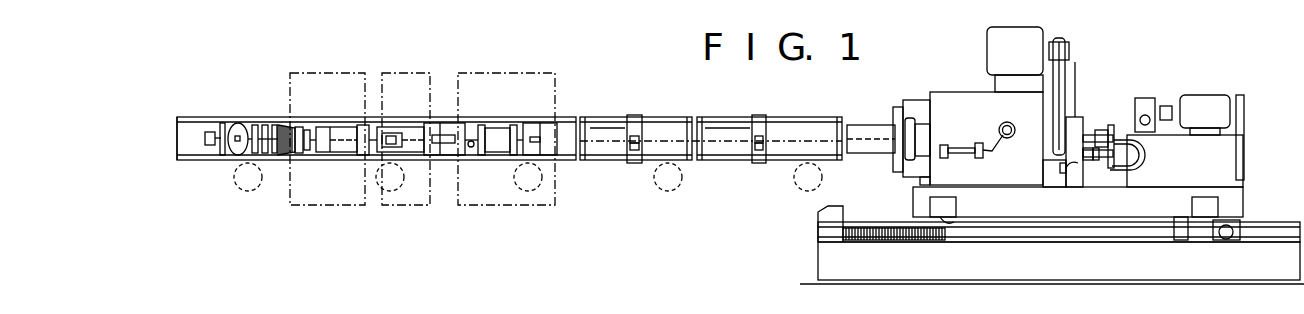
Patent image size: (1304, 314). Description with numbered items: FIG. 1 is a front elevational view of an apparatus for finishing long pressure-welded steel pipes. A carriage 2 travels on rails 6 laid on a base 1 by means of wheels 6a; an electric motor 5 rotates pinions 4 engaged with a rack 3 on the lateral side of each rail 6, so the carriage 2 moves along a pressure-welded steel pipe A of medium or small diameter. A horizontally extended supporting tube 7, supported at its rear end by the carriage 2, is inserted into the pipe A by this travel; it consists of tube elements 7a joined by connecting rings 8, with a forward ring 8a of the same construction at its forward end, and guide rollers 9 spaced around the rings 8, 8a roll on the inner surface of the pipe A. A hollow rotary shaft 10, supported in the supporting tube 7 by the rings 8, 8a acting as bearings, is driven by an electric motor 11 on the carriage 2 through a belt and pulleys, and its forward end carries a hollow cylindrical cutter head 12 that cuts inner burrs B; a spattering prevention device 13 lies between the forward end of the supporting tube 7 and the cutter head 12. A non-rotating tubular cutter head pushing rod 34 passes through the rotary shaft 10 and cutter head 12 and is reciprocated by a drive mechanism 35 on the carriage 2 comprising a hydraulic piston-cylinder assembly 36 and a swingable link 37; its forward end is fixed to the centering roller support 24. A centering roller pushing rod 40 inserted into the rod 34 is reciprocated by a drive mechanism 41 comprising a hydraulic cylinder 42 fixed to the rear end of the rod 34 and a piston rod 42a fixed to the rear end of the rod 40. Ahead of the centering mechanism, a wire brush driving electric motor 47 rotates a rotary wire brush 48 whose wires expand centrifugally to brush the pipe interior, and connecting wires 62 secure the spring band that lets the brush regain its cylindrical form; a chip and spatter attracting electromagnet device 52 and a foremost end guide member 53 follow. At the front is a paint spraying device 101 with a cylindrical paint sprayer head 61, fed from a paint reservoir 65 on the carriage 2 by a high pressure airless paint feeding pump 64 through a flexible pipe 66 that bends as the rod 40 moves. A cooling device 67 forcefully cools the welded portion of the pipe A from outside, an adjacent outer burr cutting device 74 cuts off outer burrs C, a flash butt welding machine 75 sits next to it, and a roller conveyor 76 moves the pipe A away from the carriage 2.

The base 1 is at (1024, 270).
The carriage 2 is at (1240, 208).
The rack 3 is at (918, 240).
The pinion 4 is at (1175, 236).
The electric motor 5 is at (1198, 94).
The rails 6 is at (886, 232).
The wheels 6a is at (950, 226).
The supporting tube 7 is at (740, 150).
The tube elements 7a is at (610, 128).
The connecting rings 8 is at (636, 150).
The forward ring 8a is at (548, 150).
The guide rollers 9 is at (530, 123).
The hollow rotary shaft 10 is at (471, 150).
The electric motor 11 is at (1005, 52).
The cutter head 12 is at (449, 155).
The spattering prevention device 13 is at (492, 128).
The centering roller support 24 is at (410, 128).
The cutter head pushing rod 34 is at (1072, 110).
The drive mechanism 35 is at (984, 135).
The hydraulic piston-cylinder assembly 36 is at (958, 147).
The swingable link 37 is at (1014, 136).
The centering roller pushing rod 40 is at (1096, 130).
The drive mechanism 41 is at (1098, 170).
The hydraulic cylinder 42 is at (1066, 174).
The piston rod 42a is at (1108, 165).
The wire brush driving electric motor 47 is at (347, 142).
The rotary wire brush 48 is at (290, 152).
The chip and spatter attracting electromagnet device 52 is at (270, 125).
The foremost end guide member 53 is at (238, 123).
The paint sprayer head 61 is at (210, 131).
The connecting wires 62 is at (222, 156).
The high pressure airless paint feeding pump 64 is at (1046, 170).
The paint reservoir 65 is at (1068, 62).
The flexible pipe 66 is at (1142, 156).
The cooling device 67 is at (309, 73).
The outer burr cutting device 74 is at (404, 73).
The flash butt welding machine 75 is at (510, 73).
The roller conveyor 76 is at (676, 188).
The paint spraying device 101 is at (200, 150).
The pressure-welded steel pipe A is at (345, 120).
The inner burrs B is at (497, 158).
The outer burrs C is at (499, 120).